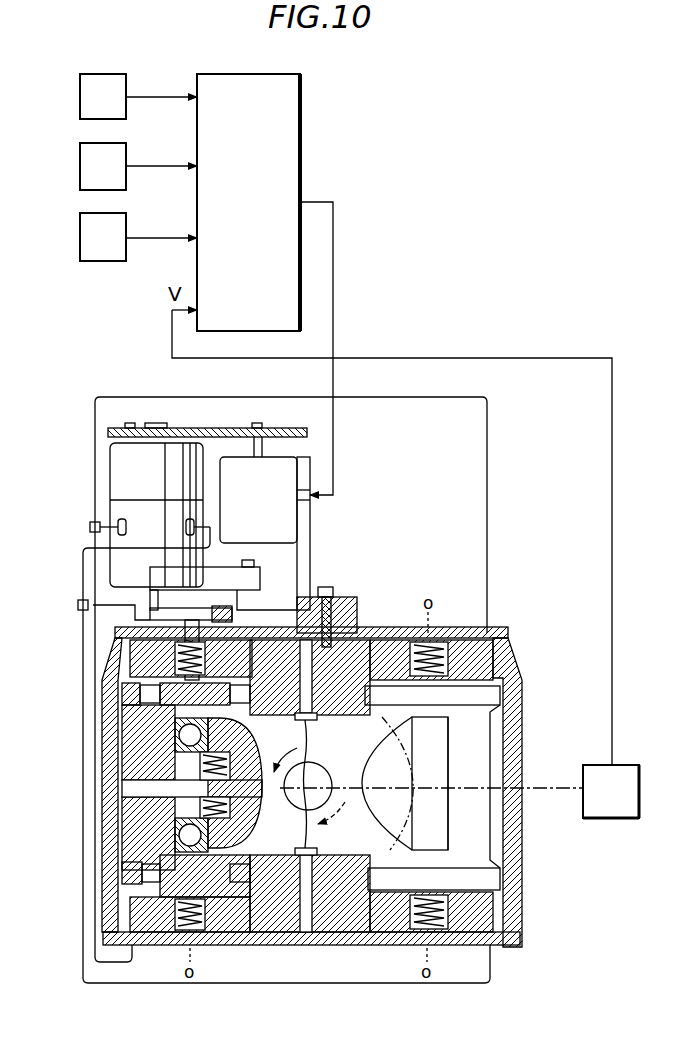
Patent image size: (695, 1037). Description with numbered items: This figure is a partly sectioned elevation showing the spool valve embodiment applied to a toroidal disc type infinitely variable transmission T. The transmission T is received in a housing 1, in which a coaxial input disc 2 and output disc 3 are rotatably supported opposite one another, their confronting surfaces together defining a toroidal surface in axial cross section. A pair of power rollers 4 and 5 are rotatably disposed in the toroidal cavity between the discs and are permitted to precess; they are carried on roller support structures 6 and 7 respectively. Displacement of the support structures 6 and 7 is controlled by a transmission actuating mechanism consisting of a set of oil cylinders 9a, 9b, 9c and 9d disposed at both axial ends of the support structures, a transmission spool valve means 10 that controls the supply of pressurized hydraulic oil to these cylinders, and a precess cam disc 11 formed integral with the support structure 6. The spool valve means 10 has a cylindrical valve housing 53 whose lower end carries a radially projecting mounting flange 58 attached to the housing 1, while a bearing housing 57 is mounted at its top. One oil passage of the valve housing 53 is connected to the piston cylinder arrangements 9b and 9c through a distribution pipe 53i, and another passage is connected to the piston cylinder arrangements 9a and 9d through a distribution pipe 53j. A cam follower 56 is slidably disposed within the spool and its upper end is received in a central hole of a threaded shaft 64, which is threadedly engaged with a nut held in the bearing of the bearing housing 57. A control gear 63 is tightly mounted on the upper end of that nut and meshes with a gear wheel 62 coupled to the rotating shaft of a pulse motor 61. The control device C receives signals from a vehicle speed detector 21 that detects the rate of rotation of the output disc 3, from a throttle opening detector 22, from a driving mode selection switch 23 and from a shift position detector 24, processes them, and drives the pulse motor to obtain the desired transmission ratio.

The throttle opening detector 22 is at (80, 87).
The driving mode selection switch 23 is at (80, 156).
The shift position detector 24 is at (80, 228).
The control device C is at (330, 99).
The valve housing 53 is at (115, 562).
The distribution pipe 53j is at (93, 486).
The distribution pipe 53i is at (83, 548).
The bearing housing 57 is at (115, 450).
The transmission spool valve means 10 is at (108, 468).
The gear wheel 62 is at (292, 428).
The control gear 63 is at (185, 428).
The threaded shaft 64 is at (153, 423).
The pulse motor 61 is at (285, 470).
The mounting flange 58 is at (248, 580).
The cam follower 56 is at (150, 596).
The precess cam disc 11 is at (148, 614).
The housing 1 is at (462, 632).
The toroidal type infinitely variable transmission T is at (512, 668).
The oil cylinder 9b is at (140, 641).
The oil cylinder 9d is at (383, 640).
The oil cylinder 9a is at (153, 930).
The oil cylinder 9c is at (388, 930).
The input disc 2 is at (337, 855).
The output disc 3 is at (280, 855).
The roller support structure 6 is at (125, 751).
The power roller 4 is at (255, 745).
The power roller 5 is at (362, 748).
The roller support structure 7 is at (480, 753).
The vehicle speed detector 21 is at (628, 820).